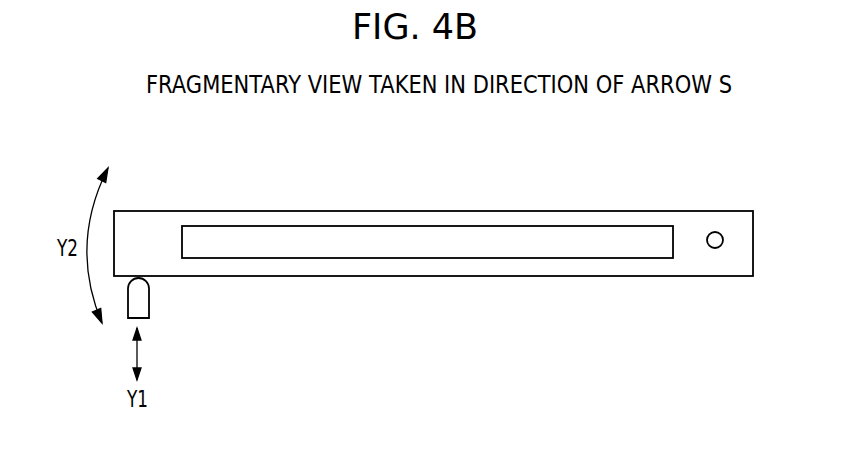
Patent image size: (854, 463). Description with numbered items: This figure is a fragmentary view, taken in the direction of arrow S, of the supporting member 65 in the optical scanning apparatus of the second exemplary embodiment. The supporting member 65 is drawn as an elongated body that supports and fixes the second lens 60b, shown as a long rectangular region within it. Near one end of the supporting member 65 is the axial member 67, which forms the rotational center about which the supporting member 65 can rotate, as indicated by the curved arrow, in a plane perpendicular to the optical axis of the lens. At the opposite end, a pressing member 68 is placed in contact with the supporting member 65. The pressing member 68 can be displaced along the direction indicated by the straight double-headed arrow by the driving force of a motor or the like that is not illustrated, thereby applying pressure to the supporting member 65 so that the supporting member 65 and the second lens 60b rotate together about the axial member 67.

The second lens 60b is at (343, 235).
The supporting member 65 is at (378, 268).
The axial member 67 is at (713, 231).
The pressing member 68 is at (143, 303).